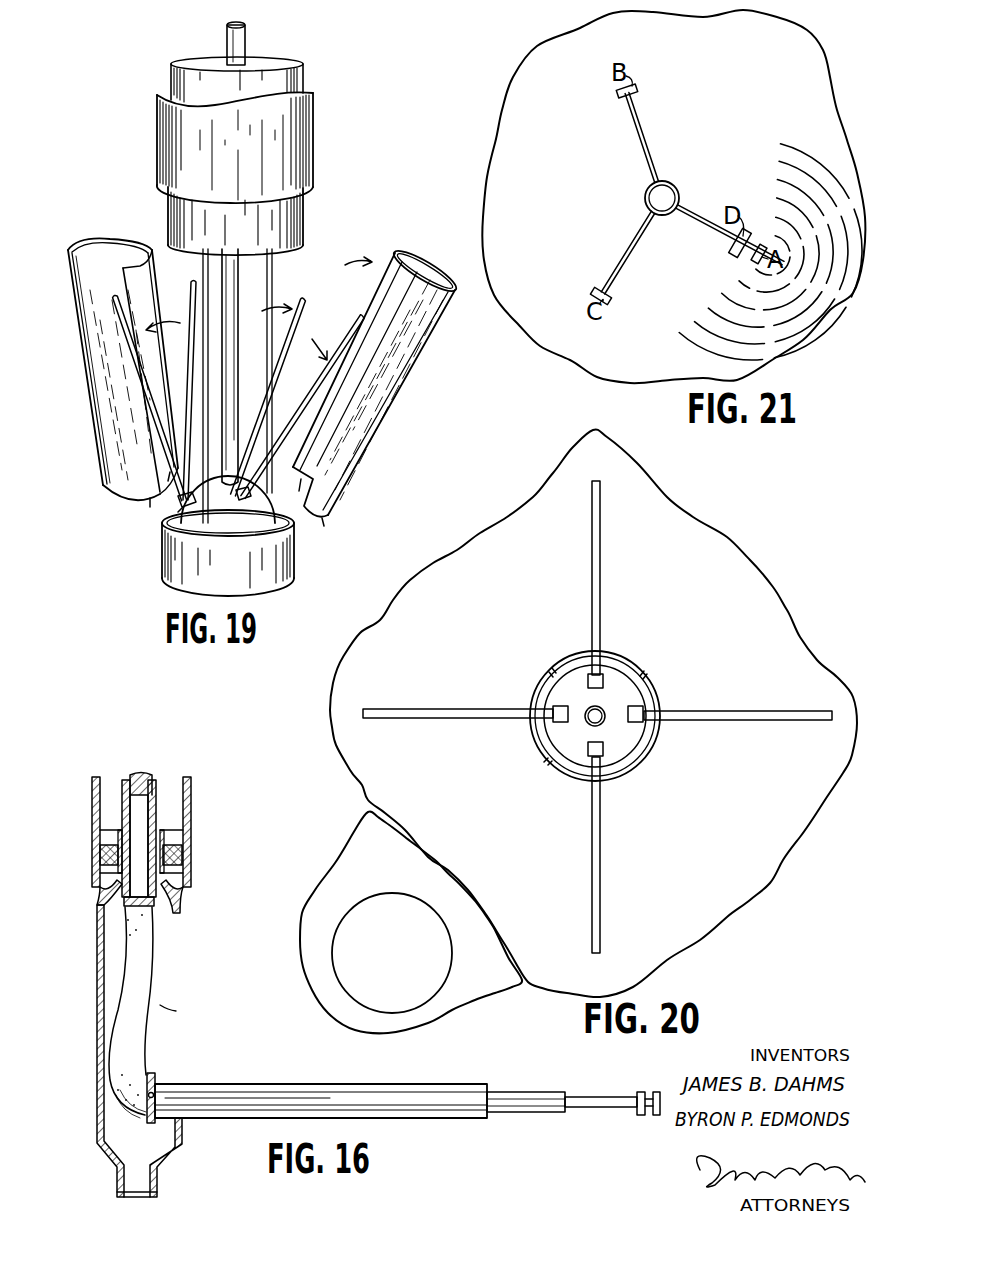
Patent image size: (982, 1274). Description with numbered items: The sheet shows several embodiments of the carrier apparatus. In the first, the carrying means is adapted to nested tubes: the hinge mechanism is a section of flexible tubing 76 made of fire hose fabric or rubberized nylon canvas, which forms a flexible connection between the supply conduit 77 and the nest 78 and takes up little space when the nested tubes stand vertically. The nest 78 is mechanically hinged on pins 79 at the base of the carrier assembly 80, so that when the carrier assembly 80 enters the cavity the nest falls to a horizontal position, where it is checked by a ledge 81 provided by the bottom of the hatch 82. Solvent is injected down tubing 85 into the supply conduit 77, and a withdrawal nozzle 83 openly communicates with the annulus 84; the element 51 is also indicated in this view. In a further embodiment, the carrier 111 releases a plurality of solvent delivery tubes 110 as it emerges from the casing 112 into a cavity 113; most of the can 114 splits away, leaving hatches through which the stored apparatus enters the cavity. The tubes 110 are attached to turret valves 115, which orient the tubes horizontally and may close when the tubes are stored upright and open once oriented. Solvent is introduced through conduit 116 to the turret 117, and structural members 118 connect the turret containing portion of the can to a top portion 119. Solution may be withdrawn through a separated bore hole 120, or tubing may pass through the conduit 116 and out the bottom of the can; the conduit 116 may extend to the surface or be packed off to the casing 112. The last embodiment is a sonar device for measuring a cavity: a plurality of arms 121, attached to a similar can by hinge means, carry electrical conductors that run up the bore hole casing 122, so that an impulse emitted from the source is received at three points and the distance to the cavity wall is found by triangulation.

In FIG. 16, the neck 51 is at (105, 894).
In FIG. 16, the flexible tubing 76 is at (147, 978).
In FIG. 16, the supply conduit 77 is at (156, 823).
In FIG. 16, the nest 78 is at (312, 1083).
In FIG. 16, the pins 79 is at (149, 1098).
In FIG. 16, the carrier assembly 80 is at (97, 981).
In FIG. 16, the ledge 81 is at (180, 1121).
In FIG. 16, the hatch 82 is at (186, 1017).
In FIG. 16, the withdrawal nozzle 83 is at (117, 1193).
In FIG. 16, the annulus 84 is at (108, 807).
In FIG. 16, the tubing 85 is at (140, 789).
In FIG. 19, the solvent delivery tubes 110 is at (122, 306).
In FIG. 20, the solvent delivery tubes 110 is at (592, 517).
In FIG. 19, the carrier 111 is at (292, 553).
In FIG. 20, the carrier 111 is at (554, 759).
In FIG. 19, the casing 112 is at (158, 142).
In FIG. 20, the cavity 113 is at (523, 831).
In FIG. 19, the can 114 is at (96, 415).
In FIG. 19, the turret valves 115 is at (229, 516).
In FIG. 20, the turret valves 115 is at (553, 708).
In FIG. 19, the conduit 116 is at (228, 37).
In FIG. 20, the conduit 116 is at (602, 720).
In FIG. 19, the turret 117 is at (186, 509).
In FIG. 20, the turret 117 is at (637, 693).
In FIG. 19, the structural members 118 is at (266, 270).
In FIG. 19, the top portion 119 is at (168, 206).
In FIG. 20, the bore hole 120 is at (405, 958).
In FIG. 21, the arms 121 is at (653, 212).
In FIG. 21, the bore hole casing 122 is at (666, 212).